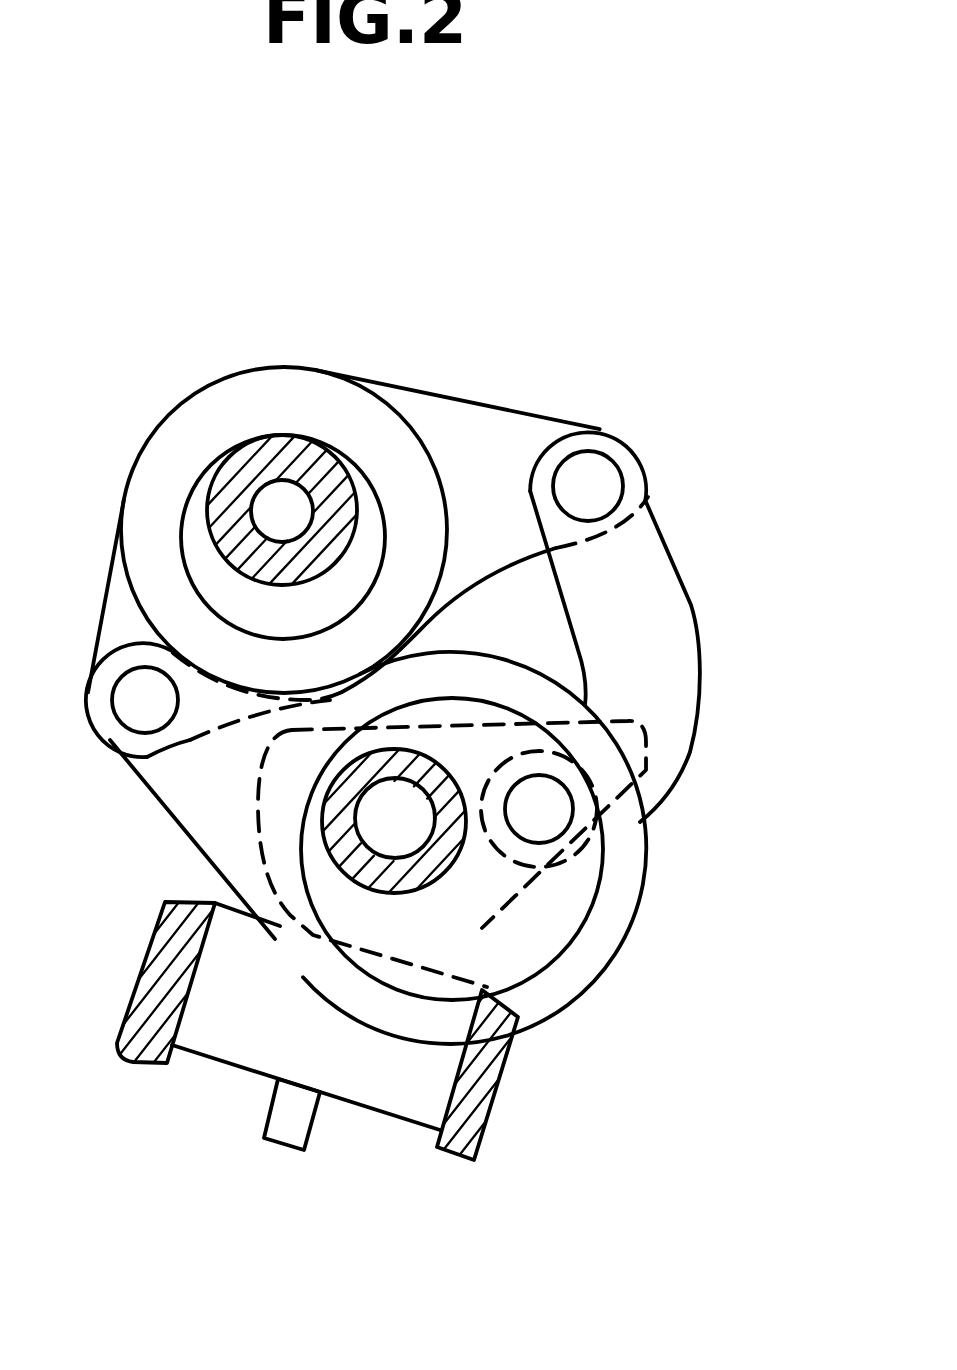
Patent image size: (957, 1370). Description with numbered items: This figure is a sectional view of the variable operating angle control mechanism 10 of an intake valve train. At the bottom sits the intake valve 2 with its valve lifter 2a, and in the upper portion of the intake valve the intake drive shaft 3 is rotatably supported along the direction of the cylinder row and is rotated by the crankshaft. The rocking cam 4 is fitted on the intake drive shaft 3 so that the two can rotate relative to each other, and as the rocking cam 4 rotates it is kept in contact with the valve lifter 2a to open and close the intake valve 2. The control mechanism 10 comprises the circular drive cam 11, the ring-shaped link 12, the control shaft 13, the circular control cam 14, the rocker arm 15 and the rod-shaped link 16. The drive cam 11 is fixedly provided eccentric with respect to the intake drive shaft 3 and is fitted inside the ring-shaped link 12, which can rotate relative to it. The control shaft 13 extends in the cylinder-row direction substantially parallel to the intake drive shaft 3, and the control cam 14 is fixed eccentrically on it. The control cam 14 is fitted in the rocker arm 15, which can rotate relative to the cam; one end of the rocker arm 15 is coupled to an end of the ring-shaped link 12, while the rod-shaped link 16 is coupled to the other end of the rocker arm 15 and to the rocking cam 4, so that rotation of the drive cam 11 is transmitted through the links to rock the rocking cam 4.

The variable operating angle control mechanism 10 is at (590, 335).
The ring-shaped link 12 is at (147, 790).
The control shaft 13 is at (265, 453).
The control cam 14 is at (198, 540).
The rocker arm 15 is at (453, 397).
The rod-shaped link 16 is at (657, 620).
The drive cam 11 is at (577, 947).
The intake drive shaft 3 is at (443, 857).
The rocking cam 4 is at (480, 930).
The intake valve 2 is at (313, 1137).
The valve lifter 2a is at (410, 1082).